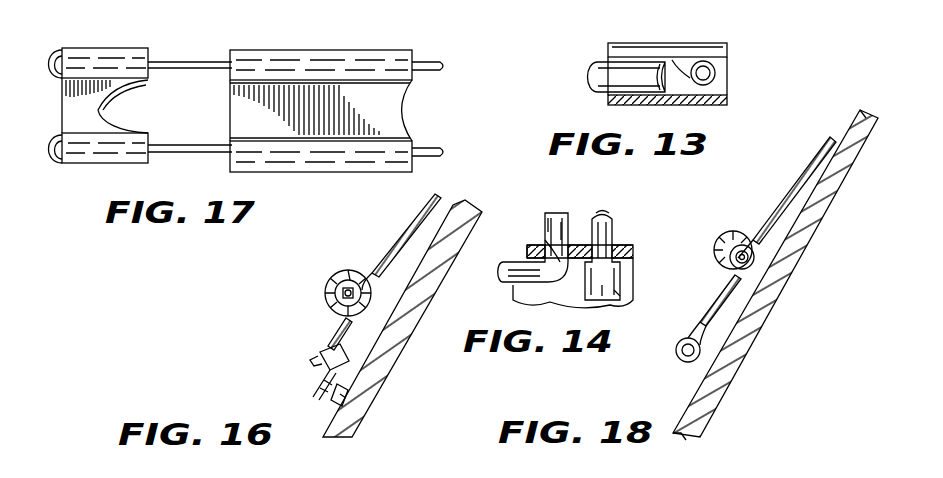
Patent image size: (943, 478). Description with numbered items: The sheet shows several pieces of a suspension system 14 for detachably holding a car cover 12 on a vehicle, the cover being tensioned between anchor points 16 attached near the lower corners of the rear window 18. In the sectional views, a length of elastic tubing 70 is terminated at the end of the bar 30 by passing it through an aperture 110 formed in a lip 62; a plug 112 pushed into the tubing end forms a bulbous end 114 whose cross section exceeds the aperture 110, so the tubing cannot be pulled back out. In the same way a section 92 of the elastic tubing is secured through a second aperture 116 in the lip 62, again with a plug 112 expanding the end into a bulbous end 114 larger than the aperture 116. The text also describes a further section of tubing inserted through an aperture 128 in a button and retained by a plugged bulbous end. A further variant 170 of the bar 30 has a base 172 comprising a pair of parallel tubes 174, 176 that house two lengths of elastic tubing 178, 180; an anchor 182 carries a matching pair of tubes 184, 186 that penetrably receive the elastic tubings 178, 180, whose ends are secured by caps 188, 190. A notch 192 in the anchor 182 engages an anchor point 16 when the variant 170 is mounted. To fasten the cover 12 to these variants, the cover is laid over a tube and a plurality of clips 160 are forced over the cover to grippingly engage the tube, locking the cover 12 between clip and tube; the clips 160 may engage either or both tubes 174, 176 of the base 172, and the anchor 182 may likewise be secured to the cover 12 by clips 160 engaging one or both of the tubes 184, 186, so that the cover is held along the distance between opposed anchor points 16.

In FIG. 16, the cover 12 is at (407, 230).
In FIG. 18, the cover 12 is at (787, 198).
In FIG. 13, the suspension system 14 is at (586, 53).
In FIG. 16, the anchor points 16 is at (324, 407).
In FIG. 16, the rear window 18 is at (395, 358).
In FIG. 18, the rear window 18 is at (800, 273).
In FIG. 13, the bar 30 is at (730, 92).
In FIG. 14, the bar 30 is at (572, 299).
In FIG. 13, the lip 62 is at (725, 58).
In FIG. 14, the lip 62 is at (634, 252).
In FIG. 13, the elastic tubing 70 is at (590, 88).
In FIG. 14, the elastic tubing 70 is at (512, 262).
In FIG. 14, the section of the elastic tubing 92 is at (615, 229).
In FIG. 14, the aperture 110 is at (545, 240).
In FIG. 13, the plug 112 is at (702, 60).
In FIG. 14, the plug 112 is at (550, 215).
In FIG. 13, the bulbous end 114 is at (682, 60).
In FIG. 14, the bulbous end 114 is at (570, 215).
In FIG. 14, the aperture 116 is at (620, 247).
In FIG. 16, the aperture 128 is at (333, 341).
In FIG. 16, the clips 160 is at (330, 290).
In FIG. 18, the clips 160 is at (727, 232).
In FIG. 17, the further variant of the bar 170 is at (300, 42).
In FIG. 17, the base 172 is at (387, 115).
In FIG. 17, the tube 174 is at (388, 48).
In FIG. 17, the tube 176 is at (310, 172).
In FIG. 17, the elastic tubing 178 is at (190, 60).
In FIG. 17, the elastic tubing 180 is at (209, 134).
In FIG. 17, the anchor 182 is at (69, 102).
In FIG. 17, the tube 184 is at (121, 32).
In FIG. 17, the tube 186 is at (80, 165).
In FIG. 17, the cap 188 is at (55, 66).
In FIG. 17, the cap 190 is at (53, 145).
In FIG. 17, the notch 192 is at (114, 101).